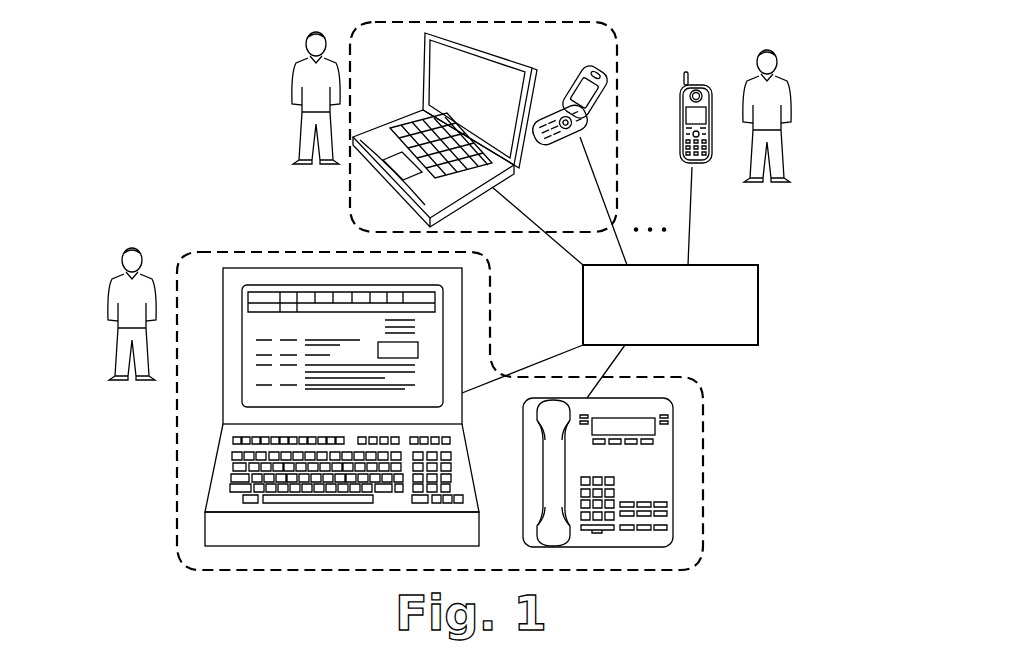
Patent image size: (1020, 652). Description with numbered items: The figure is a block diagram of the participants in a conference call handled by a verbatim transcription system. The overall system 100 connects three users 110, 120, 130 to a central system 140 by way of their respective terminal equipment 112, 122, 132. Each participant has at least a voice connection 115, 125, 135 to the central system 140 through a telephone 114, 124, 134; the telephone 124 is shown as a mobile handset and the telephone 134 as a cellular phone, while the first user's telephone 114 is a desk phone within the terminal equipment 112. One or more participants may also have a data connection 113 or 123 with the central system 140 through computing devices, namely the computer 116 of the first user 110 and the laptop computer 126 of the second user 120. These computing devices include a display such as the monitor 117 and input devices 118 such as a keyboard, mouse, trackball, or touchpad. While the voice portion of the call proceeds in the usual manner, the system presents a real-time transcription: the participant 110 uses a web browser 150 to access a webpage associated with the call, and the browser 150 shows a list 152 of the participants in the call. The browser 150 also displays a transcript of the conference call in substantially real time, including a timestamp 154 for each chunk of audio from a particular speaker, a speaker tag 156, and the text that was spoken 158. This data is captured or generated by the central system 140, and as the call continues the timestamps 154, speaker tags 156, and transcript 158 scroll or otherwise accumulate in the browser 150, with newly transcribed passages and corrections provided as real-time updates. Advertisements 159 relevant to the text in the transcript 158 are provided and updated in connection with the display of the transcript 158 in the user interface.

The overall system 100 is at (120, 92).
The user 110 is at (100, 263).
The terminal equipment 112 is at (177, 456).
The data connection 113 is at (548, 357).
The telephone 114 is at (673, 445).
The voice connection 115 is at (612, 363).
The computer 116 is at (207, 304).
The monitor 117 is at (223, 390).
The input devices 118 is at (346, 543).
The user 120 is at (278, 72).
The terminal equipment 122 is at (350, 170).
The data connection 123 is at (575, 258).
The telephone 124 is at (577, 74).
The voice connection 125 is at (600, 187).
The laptop computer 126 is at (378, 126).
The user 130 is at (797, 61).
The terminal equipment 132 is at (698, 89).
The telephone 134 is at (684, 90).
The voice connection 135 is at (690, 229).
The central system 140 is at (686, 316).
The web browser 150 is at (310, 294).
The list 152 is at (370, 328).
The timestamp 154 is at (259, 334).
The speaker tag 156 is at (288, 334).
The transcript 158 is at (370, 395).
The advertisements 159 is at (418, 350).